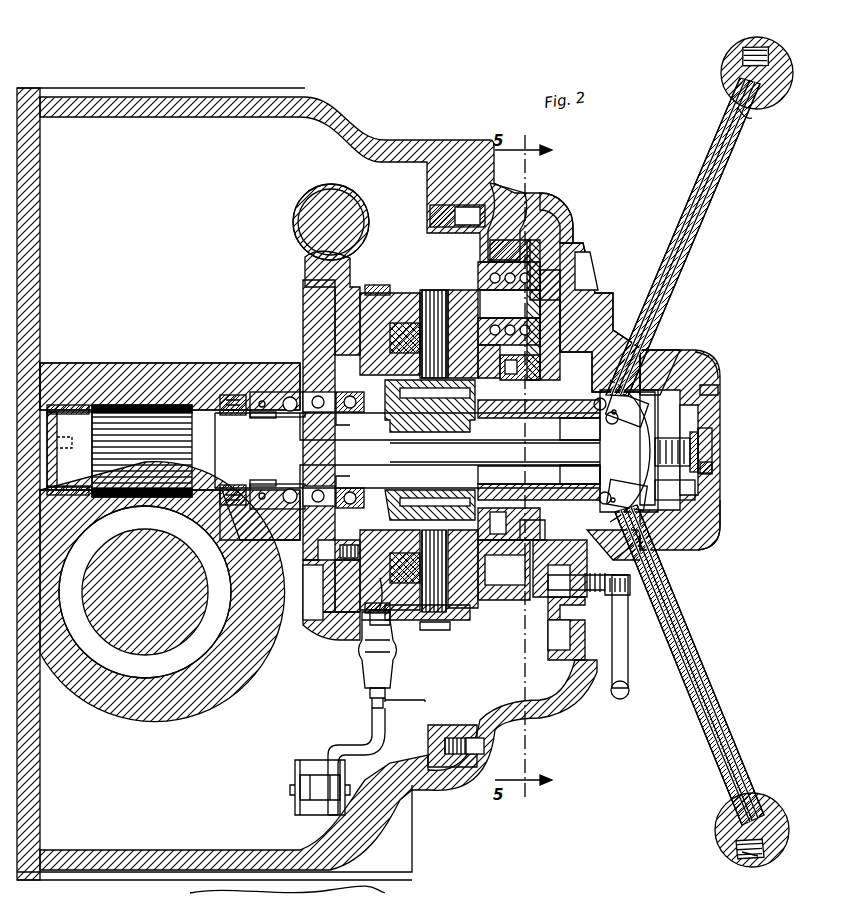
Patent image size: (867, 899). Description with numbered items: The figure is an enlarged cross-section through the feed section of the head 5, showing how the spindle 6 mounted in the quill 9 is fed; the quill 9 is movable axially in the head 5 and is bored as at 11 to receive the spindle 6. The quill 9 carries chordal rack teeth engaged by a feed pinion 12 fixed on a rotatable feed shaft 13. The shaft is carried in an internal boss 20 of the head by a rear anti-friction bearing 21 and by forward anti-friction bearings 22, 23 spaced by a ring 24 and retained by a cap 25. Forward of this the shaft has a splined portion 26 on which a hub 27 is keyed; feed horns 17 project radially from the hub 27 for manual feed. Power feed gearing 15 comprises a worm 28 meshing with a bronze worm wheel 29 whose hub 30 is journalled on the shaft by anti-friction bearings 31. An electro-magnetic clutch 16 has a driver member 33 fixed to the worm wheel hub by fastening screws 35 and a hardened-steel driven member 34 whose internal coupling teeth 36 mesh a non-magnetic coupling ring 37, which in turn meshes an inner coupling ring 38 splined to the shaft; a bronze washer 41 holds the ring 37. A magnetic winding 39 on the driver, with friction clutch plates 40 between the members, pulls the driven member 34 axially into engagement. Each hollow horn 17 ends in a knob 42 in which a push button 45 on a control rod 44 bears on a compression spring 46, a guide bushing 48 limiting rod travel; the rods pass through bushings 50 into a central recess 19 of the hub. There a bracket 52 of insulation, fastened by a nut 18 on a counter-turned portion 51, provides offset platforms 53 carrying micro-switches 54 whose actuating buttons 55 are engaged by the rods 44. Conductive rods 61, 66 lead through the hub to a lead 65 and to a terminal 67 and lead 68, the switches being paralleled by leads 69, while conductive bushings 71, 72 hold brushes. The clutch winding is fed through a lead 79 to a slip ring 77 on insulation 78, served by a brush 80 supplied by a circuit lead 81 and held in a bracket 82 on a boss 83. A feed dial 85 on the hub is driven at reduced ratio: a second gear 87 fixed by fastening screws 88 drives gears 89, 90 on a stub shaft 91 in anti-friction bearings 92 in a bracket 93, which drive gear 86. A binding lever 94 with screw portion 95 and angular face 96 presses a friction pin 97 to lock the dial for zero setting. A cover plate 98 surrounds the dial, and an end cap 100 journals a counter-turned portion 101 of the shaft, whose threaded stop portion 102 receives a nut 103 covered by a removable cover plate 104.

The head 5 is at (396, 136).
The spindle 6 is at (150, 650).
The quill 9 is at (108, 700).
The bore 11 is at (140, 508).
The feed pinion 12 is at (138, 430).
The feed shaft 13 is at (407, 450).
The feed gearing 15 is at (296, 200).
The clutch 16 is at (428, 285).
The feed horns 17 is at (722, 712).
The nut 18 is at (718, 394).
The central recess 19 is at (700, 378).
The internal boss 20 is at (102, 363).
The anti-friction bearing 21 is at (66, 410).
The anti-friction bearing 22 is at (232, 398).
The anti-friction bearing 23 is at (285, 395).
The ring 24 is at (260, 412).
The cap 25 is at (300, 350).
The splined portion 26 is at (405, 448).
The hub 27 is at (688, 360).
The worm 28 is at (322, 192).
The worm wheel 29 is at (306, 270).
The hub 30 is at (368, 412).
The anti-friction bearings 31 is at (382, 486).
The driver member 33 is at (405, 292).
The driven member 34 is at (468, 606).
The fastening screws 35 is at (345, 562).
The coupling teeth 36 is at (468, 555).
The coupling ring 37 is at (468, 490).
The inner coupling ring 38 is at (465, 410).
The magnetic winding 39 is at (410, 610).
The friction clutch plates 40 is at (431, 290).
The bronze washer 41 is at (485, 372).
The knob 42 is at (726, 840).
The control rod 44 is at (700, 672).
The push button 45 is at (768, 860).
The compression spring 46 is at (735, 858).
The guide bushing 48 is at (755, 120).
The bushings 50 is at (660, 540).
The counter-turned portion 51 is at (575, 442).
The bracket 52 is at (660, 500).
The offset platforms 53 is at (660, 348).
The micro-switches 54 is at (628, 452).
The actuating buttons 55 is at (705, 541).
The conductive rod 61 is at (548, 486).
The lead 65 is at (599, 492).
The conductive rod 66 is at (535, 418).
The terminal 67 is at (597, 405).
The lead 68 is at (605, 418).
The leads 69 is at (610, 450).
The conductive bushing 71 is at (495, 522).
The conductive bushing 72 is at (512, 380).
The slip ring 77 is at (395, 285).
The insulation 78 is at (395, 620).
The lead 79 is at (380, 592).
The brush 80 is at (362, 648).
The circuit lead 81 is at (408, 702).
The bracket 82 is at (350, 745).
The boss 83 is at (313, 800).
The feed dial 85 is at (595, 262).
The gear 86 is at (545, 600).
The second gear 87 is at (538, 578).
The fastening screws 88 is at (522, 535).
The gear 89 is at (548, 268).
The gear 90 is at (540, 244).
The stub shaft 91 is at (509, 303).
The anti-friction bearings 92 is at (508, 258).
The bracket 93 is at (502, 230).
The binding lever 94 is at (620, 652).
The screw portion 95 is at (610, 605).
The angular face 96 is at (572, 615).
The friction pin 97 is at (548, 600).
The cover plate 98 is at (578, 222).
The end cap 100 is at (718, 520).
The counter-turned portion 101 is at (715, 425).
The threaded stop portion 102 is at (715, 438).
The nut 103 is at (715, 469).
The removable cover plate 104 is at (720, 453).